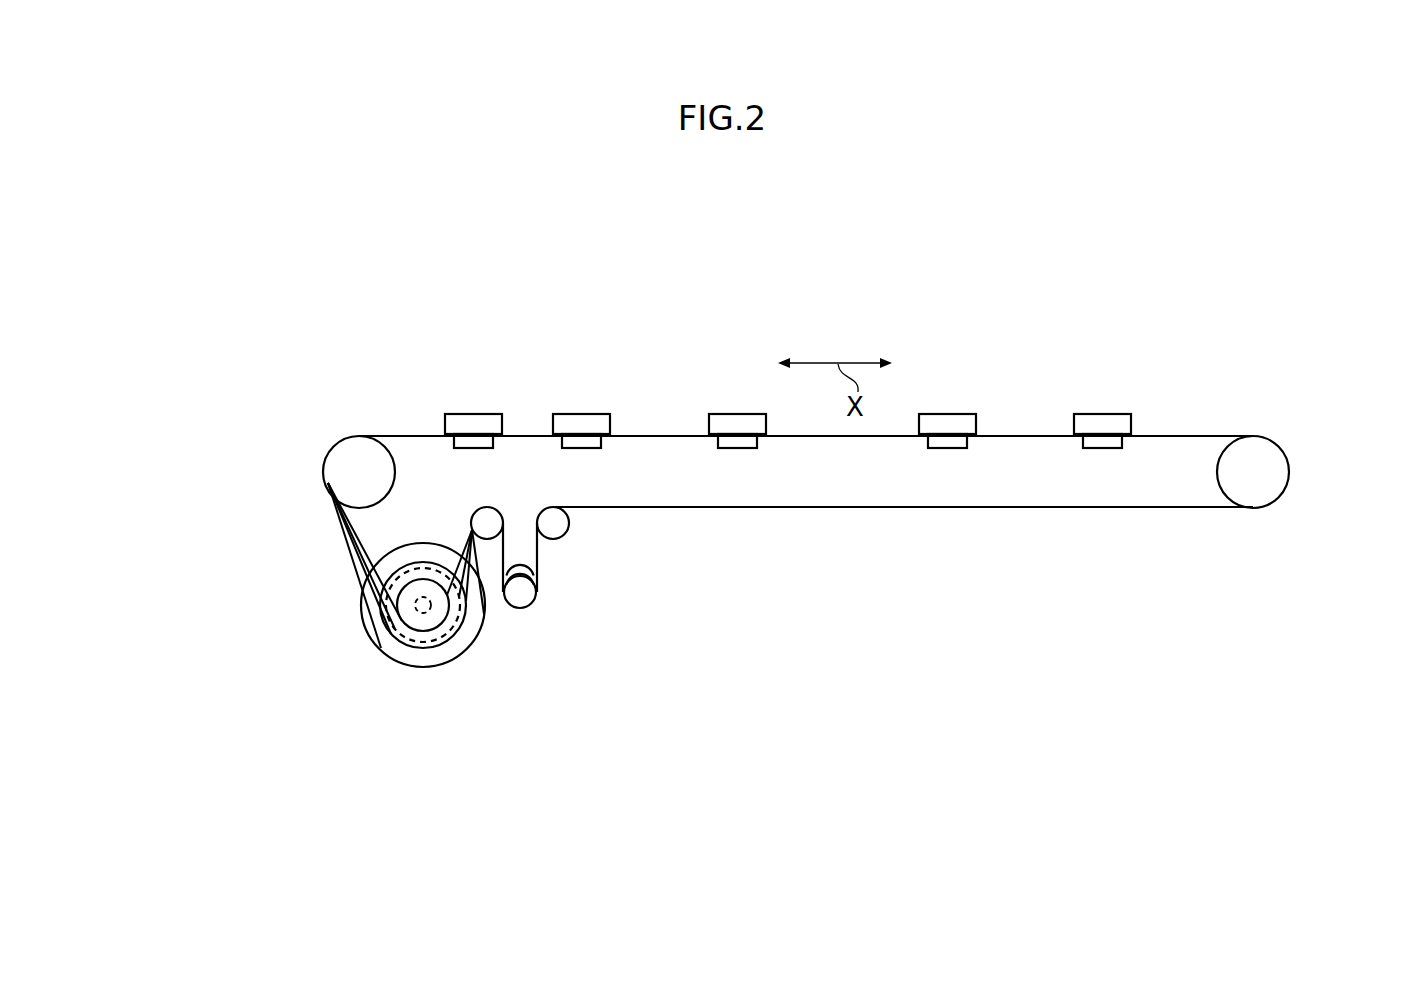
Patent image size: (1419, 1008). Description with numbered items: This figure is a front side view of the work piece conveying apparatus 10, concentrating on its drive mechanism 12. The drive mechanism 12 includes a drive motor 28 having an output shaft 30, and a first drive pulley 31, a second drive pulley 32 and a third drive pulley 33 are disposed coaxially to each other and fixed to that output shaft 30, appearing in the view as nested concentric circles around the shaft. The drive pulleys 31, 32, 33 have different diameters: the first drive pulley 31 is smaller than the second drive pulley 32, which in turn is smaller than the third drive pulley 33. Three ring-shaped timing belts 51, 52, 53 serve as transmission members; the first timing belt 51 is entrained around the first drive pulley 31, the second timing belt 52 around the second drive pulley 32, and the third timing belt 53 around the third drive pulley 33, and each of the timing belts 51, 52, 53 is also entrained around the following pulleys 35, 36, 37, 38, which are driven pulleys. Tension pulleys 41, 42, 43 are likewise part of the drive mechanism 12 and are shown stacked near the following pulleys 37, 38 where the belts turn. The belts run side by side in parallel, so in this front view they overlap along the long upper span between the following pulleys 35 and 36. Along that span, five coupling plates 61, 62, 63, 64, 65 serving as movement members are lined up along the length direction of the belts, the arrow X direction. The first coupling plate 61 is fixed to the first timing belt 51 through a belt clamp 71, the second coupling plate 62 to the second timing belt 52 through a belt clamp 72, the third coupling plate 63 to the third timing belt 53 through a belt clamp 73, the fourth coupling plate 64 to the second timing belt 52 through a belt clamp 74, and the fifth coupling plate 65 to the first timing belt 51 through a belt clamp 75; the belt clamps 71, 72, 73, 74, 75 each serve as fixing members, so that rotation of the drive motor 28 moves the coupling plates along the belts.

The printing apparatus 10 is at (833, 322).
The drive mechanism 12 is at (368, 612).
The drive motor 28 is at (383, 657).
The output shaft 30 is at (426, 613).
The first drive pulley 31 is at (447, 620).
The second drive pulley 32 is at (463, 612).
The third drive pulley 33 is at (480, 612).
The following pulley 35 is at (330, 447).
The following pulley 36 is at (1284, 449).
The following pulley 37 is at (569, 530).
The following pulley 38 is at (474, 510).
The tension pulley 41 is at (536, 600).
The tension pulley 42 is at (536, 582).
The tension pulley 43 is at (534, 568).
The first timing belt 51 is at (353, 580).
The second timing belt 52 is at (345, 557).
The third timing belt 53 is at (342, 540).
The first coupling plate 61 is at (475, 413).
The second coupling plate 62 is at (585, 413).
The third coupling plate 63 is at (742, 413).
The fourth coupling plate 64 is at (950, 413).
The fifth coupling plate 65 is at (1109, 413).
The belt clamp 71 is at (473, 449).
The belt clamp 72 is at (581, 449).
The belt clamp 73 is at (738, 449).
The belt clamp 74 is at (947, 449).
The belt clamp 75 is at (1103, 449).